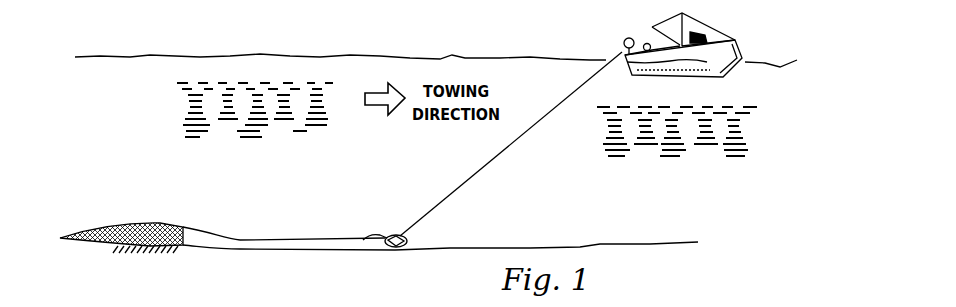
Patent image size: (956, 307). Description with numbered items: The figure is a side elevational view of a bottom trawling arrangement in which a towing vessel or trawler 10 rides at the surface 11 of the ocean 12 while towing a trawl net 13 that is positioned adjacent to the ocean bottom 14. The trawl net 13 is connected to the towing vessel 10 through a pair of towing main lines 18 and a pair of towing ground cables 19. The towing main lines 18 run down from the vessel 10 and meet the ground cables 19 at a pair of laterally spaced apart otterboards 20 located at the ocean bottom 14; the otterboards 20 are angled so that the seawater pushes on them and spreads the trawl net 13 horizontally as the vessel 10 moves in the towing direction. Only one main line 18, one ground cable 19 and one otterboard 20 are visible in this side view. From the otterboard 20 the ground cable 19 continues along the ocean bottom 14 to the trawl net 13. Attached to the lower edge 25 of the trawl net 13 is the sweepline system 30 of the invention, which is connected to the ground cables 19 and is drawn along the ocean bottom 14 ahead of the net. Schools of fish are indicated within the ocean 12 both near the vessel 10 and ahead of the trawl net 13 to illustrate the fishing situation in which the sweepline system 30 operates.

The towing vessel 10 is at (738, 40).
The surface 11 is at (465, 58).
The ocean 12 is at (183, 135).
The trawl net 13 is at (155, 218).
The ocean bottom 14 is at (518, 247).
The towing main lines 18 is at (487, 162).
The towing ground cables 19 is at (278, 240).
The otterboards 20 is at (395, 232).
The lower edge 25 is at (185, 240).
The sweepline system 30 is at (133, 255).